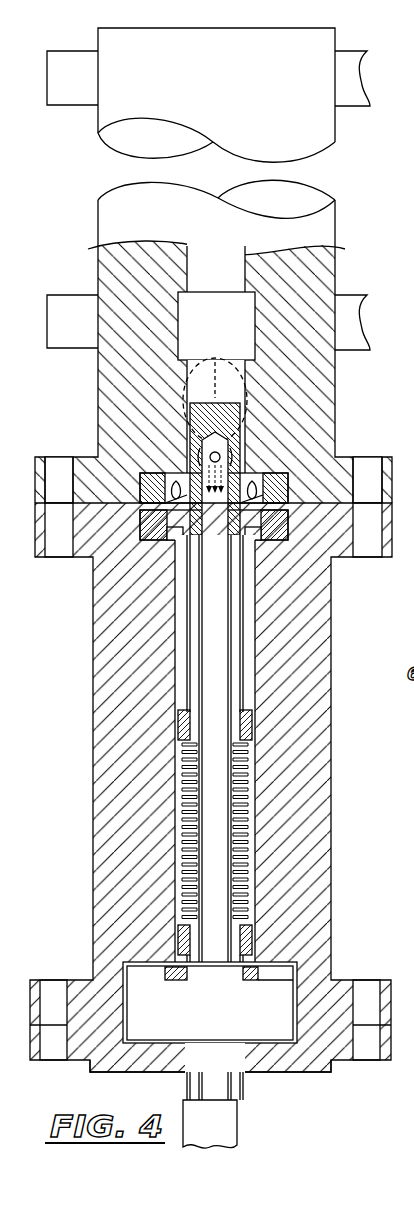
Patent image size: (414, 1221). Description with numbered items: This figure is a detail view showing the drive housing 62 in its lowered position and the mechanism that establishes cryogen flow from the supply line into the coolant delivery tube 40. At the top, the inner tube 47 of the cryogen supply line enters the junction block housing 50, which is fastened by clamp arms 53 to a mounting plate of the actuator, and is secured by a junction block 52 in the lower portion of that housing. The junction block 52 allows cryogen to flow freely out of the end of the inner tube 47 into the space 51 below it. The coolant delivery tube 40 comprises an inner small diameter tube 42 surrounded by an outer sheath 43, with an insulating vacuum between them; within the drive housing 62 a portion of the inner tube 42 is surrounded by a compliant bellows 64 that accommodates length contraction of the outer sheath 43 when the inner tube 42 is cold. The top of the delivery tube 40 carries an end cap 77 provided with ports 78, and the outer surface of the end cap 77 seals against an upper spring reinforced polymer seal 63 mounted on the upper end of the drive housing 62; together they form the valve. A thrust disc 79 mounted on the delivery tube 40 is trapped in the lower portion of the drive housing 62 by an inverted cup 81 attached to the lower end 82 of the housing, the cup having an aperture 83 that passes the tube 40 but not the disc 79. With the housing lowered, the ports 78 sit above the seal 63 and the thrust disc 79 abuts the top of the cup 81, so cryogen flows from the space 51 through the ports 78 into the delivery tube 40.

The clamp arms 53 is at (345, 63).
The junction block housing 50 is at (120, 271).
The inner tube 47 is at (246, 264).
The junction block 52 is at (178, 307).
The space 51 is at (193, 380).
The end cap 77 is at (217, 402).
The ports 78 is at (200, 457).
The upper spring reinforced polymer seal 63 is at (253, 492).
The inner small diameter tube 42 is at (210, 625).
The outer sheath 43 is at (188, 668).
The coolant delivery tube 40 is at (246, 655).
The drive housing 62 is at (88, 752).
The bellows 64 is at (243, 830).
The inverted cup 81 is at (135, 962).
The aperture 83 is at (255, 956).
The thrust disc 79 is at (246, 982).
The lower end 82 is at (302, 1073).